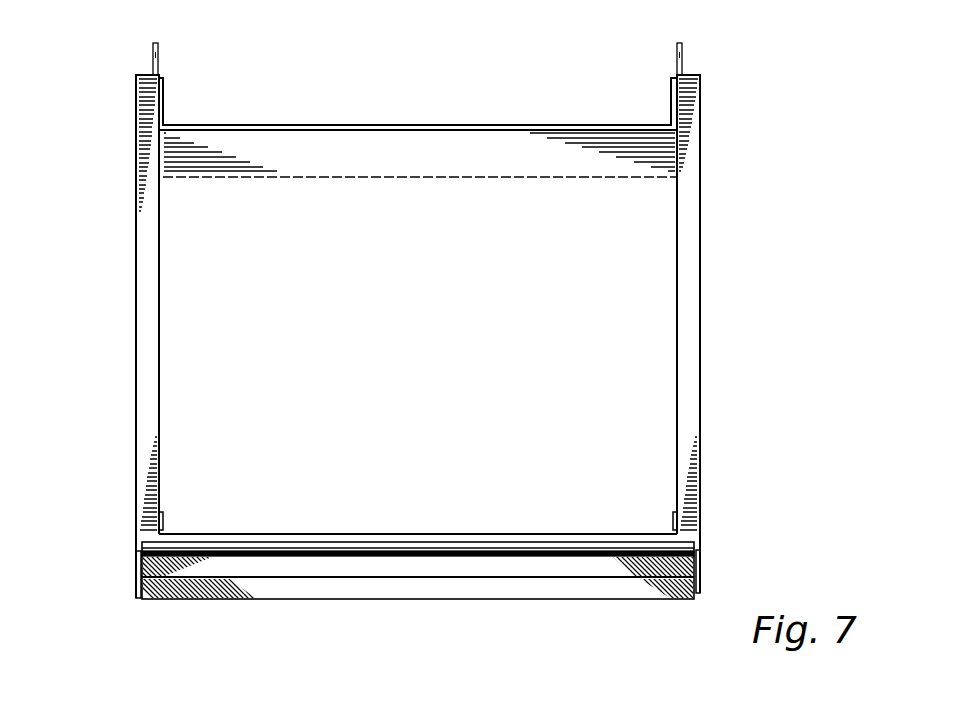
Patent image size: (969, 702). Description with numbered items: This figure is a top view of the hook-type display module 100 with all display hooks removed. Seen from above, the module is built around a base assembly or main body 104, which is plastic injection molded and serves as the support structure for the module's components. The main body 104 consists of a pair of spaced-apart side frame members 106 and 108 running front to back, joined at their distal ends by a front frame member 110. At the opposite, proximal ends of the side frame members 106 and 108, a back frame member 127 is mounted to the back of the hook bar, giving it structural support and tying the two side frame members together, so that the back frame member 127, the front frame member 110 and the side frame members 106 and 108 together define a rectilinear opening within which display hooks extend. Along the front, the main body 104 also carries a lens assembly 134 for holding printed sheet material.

The hook-type display module 100 is at (740, 115).
The base assembly or main body 104 is at (127, 365).
The side frame member 106 is at (688, 283).
The side frame member 108 is at (147, 283).
The front frame member 110 is at (542, 535).
The back frame member 127 is at (534, 116).
The lens assembly 134 is at (130, 586).